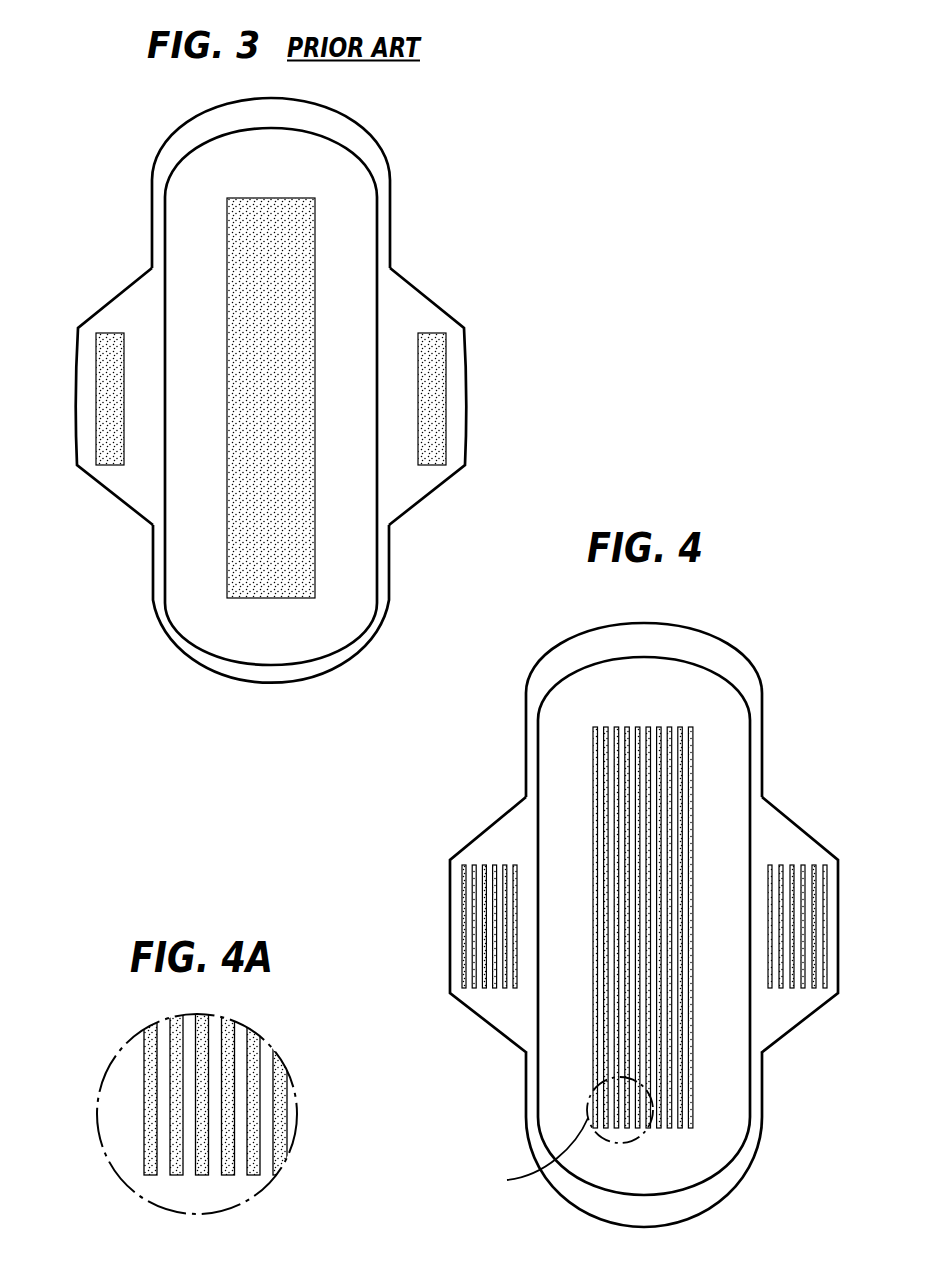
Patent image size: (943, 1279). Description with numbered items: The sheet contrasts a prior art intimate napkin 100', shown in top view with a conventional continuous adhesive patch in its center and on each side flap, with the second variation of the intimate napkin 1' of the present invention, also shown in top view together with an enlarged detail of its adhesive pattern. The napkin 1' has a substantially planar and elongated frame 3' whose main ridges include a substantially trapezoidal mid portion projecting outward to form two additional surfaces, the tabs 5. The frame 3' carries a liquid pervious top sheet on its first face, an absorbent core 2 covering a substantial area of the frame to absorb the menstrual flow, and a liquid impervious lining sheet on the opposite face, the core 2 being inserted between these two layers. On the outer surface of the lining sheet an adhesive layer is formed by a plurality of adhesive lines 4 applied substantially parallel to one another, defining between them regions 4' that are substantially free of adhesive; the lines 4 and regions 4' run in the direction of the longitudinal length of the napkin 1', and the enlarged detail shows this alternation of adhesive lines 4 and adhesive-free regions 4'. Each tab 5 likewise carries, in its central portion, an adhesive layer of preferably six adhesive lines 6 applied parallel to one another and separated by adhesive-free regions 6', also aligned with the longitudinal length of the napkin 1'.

In FIG. 3, the prior art sanitary napkin 100' is at (259, 379).
In FIG. 4, the intimate napkin 1' is at (612, 901).
In FIG. 4, the absorbent core 2 is at (673, 677).
In FIG. 4, the frame 3' is at (644, 909).
In FIG. 4, the adhesive lines 4 is at (703, 908).
In FIG. 4A, the adhesive lines 4 is at (170, 1090).
In FIG. 4A, the region 4' is at (106, 1090).
In FIG. 4, the tabs 5 is at (490, 850).
In FIG. 4, the adhesive lines 6 is at (602, 926).
In FIG. 4, the regions 6' is at (434, 926).